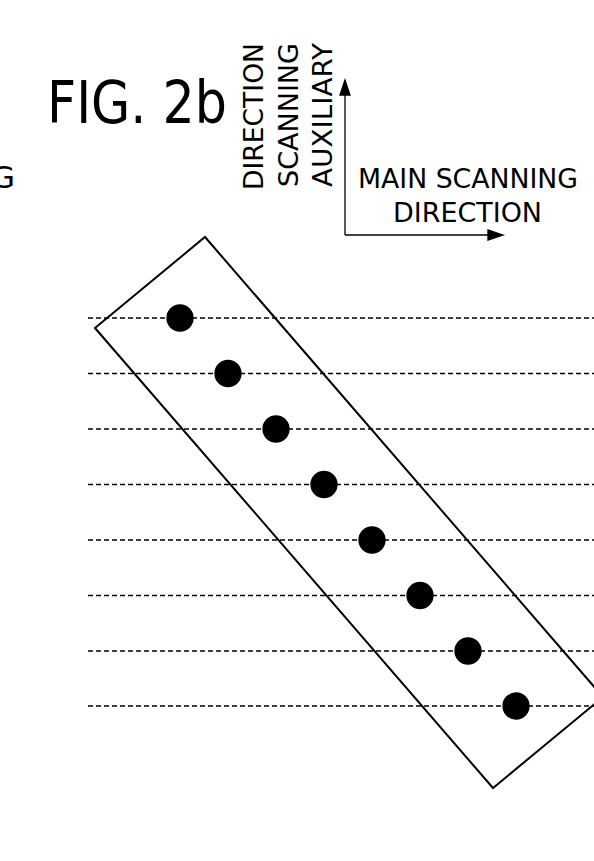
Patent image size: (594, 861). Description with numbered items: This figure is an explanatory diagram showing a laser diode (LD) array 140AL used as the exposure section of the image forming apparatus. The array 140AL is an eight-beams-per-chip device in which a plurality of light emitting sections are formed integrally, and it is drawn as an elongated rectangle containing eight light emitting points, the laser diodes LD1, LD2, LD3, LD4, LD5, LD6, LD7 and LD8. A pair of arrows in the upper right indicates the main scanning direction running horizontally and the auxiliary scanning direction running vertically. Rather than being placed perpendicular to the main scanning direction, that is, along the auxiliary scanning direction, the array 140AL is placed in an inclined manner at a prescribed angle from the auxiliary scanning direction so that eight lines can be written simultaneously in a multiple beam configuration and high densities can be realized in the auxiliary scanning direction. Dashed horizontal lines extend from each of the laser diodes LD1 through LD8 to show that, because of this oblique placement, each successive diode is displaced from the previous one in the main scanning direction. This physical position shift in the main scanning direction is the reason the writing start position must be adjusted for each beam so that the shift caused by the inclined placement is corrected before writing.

The laser diode (LD) array 140AL is at (134, 295).
The laser diode LD1 is at (301, 318).
The laser diode LD2 is at (300, 373).
The laser diode LD3 is at (300, 429).
The laser diode LD4 is at (300, 485).
The laser diode LD5 is at (300, 540).
The laser diode LD6 is at (300, 596).
The laser diode LD7 is at (300, 651).
The laser diode LD8 is at (300, 706).